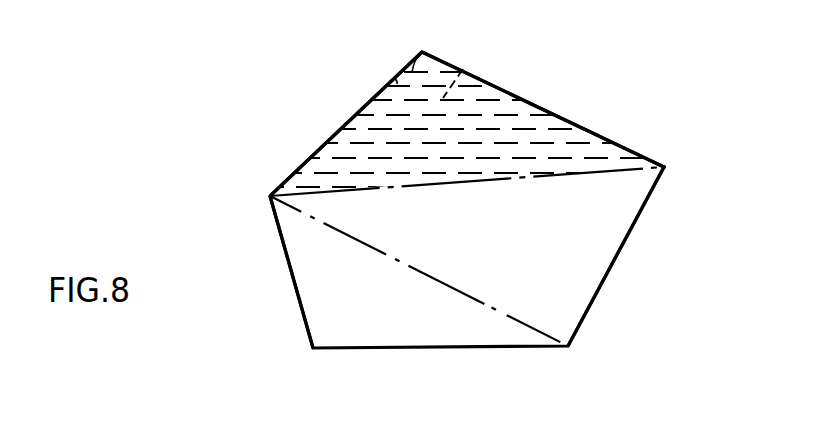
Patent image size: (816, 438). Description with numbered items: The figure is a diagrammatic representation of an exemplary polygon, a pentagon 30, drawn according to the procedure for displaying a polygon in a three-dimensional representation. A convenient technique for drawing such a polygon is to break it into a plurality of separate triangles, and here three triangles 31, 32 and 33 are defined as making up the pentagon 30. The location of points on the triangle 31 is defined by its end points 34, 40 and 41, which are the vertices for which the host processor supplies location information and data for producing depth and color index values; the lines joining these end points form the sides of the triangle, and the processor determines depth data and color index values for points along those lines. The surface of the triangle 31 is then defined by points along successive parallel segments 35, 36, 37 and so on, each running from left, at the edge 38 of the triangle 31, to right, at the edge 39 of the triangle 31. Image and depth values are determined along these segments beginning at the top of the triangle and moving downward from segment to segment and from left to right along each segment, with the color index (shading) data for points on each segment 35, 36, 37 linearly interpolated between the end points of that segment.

The pentagon 30 is at (642, 110).
The triangle 31 is at (490, 108).
The triangle 32 is at (600, 244).
The triangle 33 is at (298, 248).
The end point 34 is at (422, 52).
The segment 35 is at (422, 52).
The segment 36 is at (393, 78).
The segment 37 is at (463, 69).
The edge of triangle 38 is at (320, 146).
The edge of triangle 39 is at (560, 118).
The end point 40 is at (270, 196).
The end point 41 is at (664, 167).